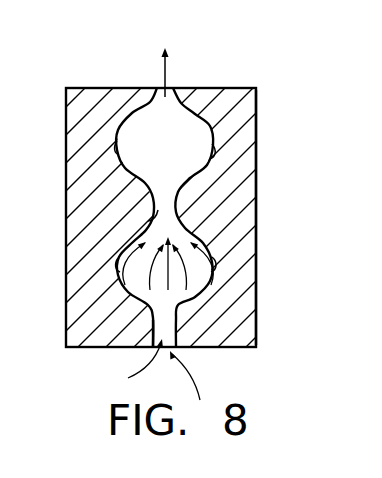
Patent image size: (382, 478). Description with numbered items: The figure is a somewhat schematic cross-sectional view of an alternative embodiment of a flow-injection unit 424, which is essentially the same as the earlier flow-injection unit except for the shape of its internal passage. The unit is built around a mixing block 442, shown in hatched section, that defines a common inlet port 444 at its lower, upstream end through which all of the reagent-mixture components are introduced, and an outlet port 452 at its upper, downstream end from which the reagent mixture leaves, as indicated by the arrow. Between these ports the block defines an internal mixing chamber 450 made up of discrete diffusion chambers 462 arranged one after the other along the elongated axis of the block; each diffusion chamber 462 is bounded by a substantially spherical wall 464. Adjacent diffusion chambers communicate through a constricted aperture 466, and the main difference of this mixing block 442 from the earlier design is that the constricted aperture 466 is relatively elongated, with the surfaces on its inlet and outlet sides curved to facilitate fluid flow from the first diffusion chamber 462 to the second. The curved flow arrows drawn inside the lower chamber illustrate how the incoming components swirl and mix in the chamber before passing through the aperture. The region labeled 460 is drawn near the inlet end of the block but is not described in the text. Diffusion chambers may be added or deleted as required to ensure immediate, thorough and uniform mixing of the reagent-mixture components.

The flow-injection unit 424 is at (276, 105).
The mixing block 442 is at (254, 209).
The mixing chamber 450 is at (115, 108).
The outlet port 452 is at (167, 86).
The diffusion chamber 462 is at (117, 148).
The spherical wall 464 is at (214, 150).
The constricted aperture 466 is at (150, 217).
The channel inlet opening 460 is at (118, 342).
The common inlet port 444 is at (176, 349).